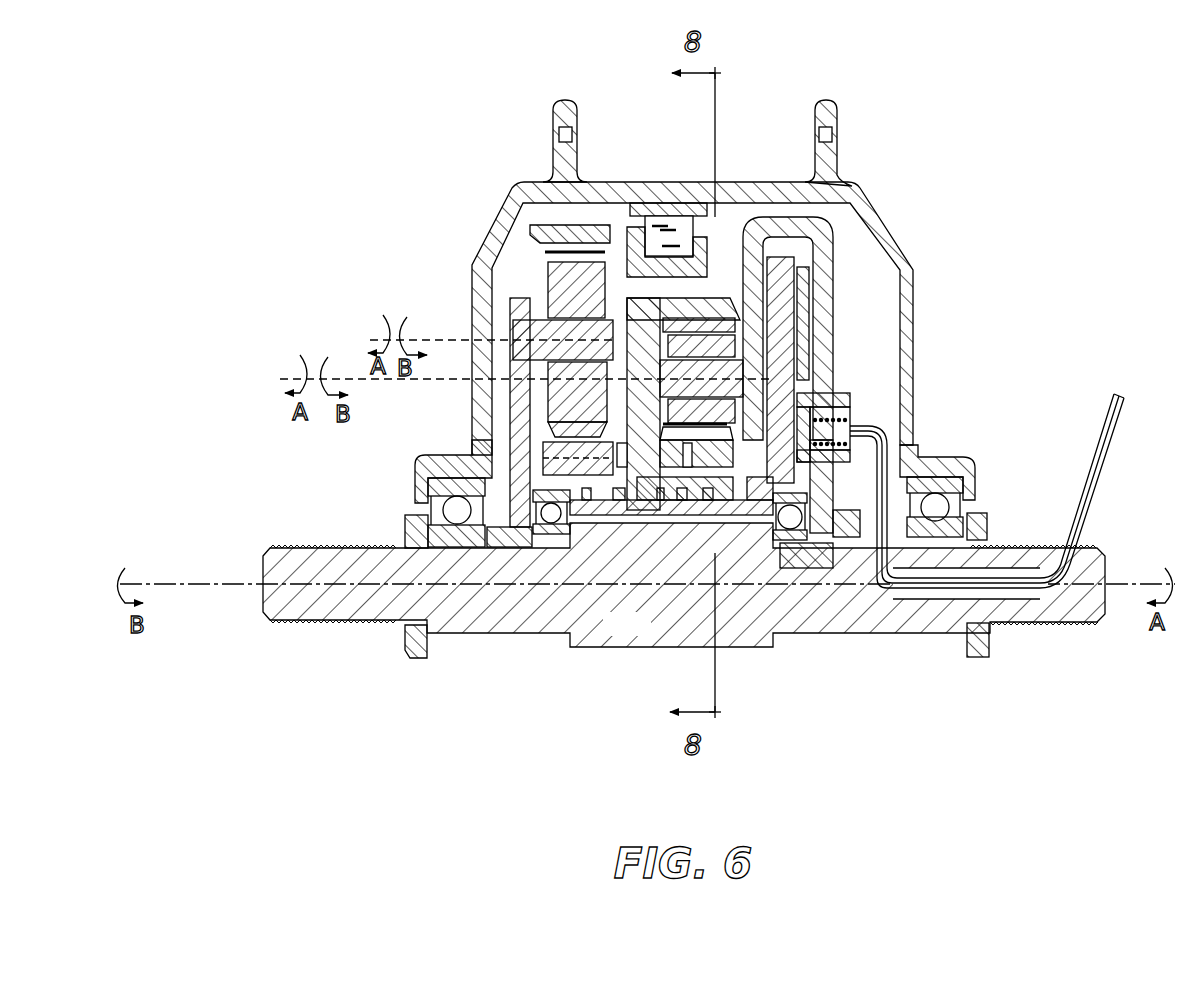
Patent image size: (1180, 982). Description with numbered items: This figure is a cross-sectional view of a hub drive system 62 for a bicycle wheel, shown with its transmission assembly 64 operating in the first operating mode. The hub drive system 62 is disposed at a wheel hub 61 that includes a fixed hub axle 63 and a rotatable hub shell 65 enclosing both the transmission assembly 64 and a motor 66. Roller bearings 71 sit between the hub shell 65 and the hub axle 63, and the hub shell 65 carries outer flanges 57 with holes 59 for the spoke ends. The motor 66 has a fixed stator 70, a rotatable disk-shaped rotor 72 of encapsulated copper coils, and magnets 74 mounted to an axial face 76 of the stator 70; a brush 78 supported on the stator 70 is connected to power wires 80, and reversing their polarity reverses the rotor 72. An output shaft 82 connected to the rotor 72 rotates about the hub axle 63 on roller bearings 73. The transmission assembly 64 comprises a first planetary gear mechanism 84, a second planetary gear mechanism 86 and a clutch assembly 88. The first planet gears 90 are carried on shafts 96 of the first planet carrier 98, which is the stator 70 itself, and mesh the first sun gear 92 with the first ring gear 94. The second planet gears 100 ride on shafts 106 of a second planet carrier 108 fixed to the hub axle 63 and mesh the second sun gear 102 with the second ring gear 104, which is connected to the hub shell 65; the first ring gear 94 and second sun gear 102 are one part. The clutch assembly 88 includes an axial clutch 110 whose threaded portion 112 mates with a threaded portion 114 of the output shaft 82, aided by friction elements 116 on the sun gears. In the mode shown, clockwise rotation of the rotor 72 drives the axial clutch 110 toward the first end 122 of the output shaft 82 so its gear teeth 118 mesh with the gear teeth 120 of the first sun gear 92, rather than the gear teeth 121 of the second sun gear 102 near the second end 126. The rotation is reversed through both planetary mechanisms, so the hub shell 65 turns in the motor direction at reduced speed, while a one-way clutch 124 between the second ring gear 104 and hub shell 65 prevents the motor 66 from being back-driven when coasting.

The outer flanges 57 is at (563, 105).
The holes 59 is at (567, 135).
The wheel hub 61 is at (1032, 149).
The hub drive system 62 is at (945, 251).
The hub axle 63 is at (1025, 620).
The transmission assembly 64 is at (458, 296).
The hub shell 65 is at (888, 188).
The motor 66 is at (833, 235).
The stator 70 is at (875, 252).
The roller bearings 71 is at (457, 510).
The rotor 72 is at (782, 330).
The roller bearings 73 is at (475, 632).
The magnets 74 is at (818, 287).
The axial face 76 is at (828, 307).
The brush 78 is at (875, 415).
The power wires 80 is at (1093, 462).
The output shaft 82 is at (549, 515).
The first planetary gear mechanism 84 is at (740, 240).
The second planetary gear mechanism 86 is at (514, 235).
The clutch assembly 88 is at (642, 712).
The first plurality of planet gears 90 is at (727, 297).
The first sun gear 92 is at (715, 450).
The first ring gear 94 is at (680, 297).
The shafts 96 is at (800, 393).
The first planet carrier 98 is at (753, 347).
The second plurality of planet gears 100 is at (557, 280).
The second sun gear 102 is at (543, 447).
The second ring gear 104 is at (525, 185).
The shafts 106 is at (540, 305).
The second planet carrier 108 is at (405, 528).
The axial clutch 110 is at (698, 480).
The threaded portion 112 is at (630, 480).
The threaded portion 114 is at (735, 500).
The friction elements 116 is at (592, 480).
The gear teeth 118 is at (648, 500).
The gear teeth 120 is at (762, 520).
The gear teeth 121 is at (525, 483).
The first end 122 is at (826, 478).
The one-way clutch 124 is at (670, 210).
The second end 126 is at (420, 476).